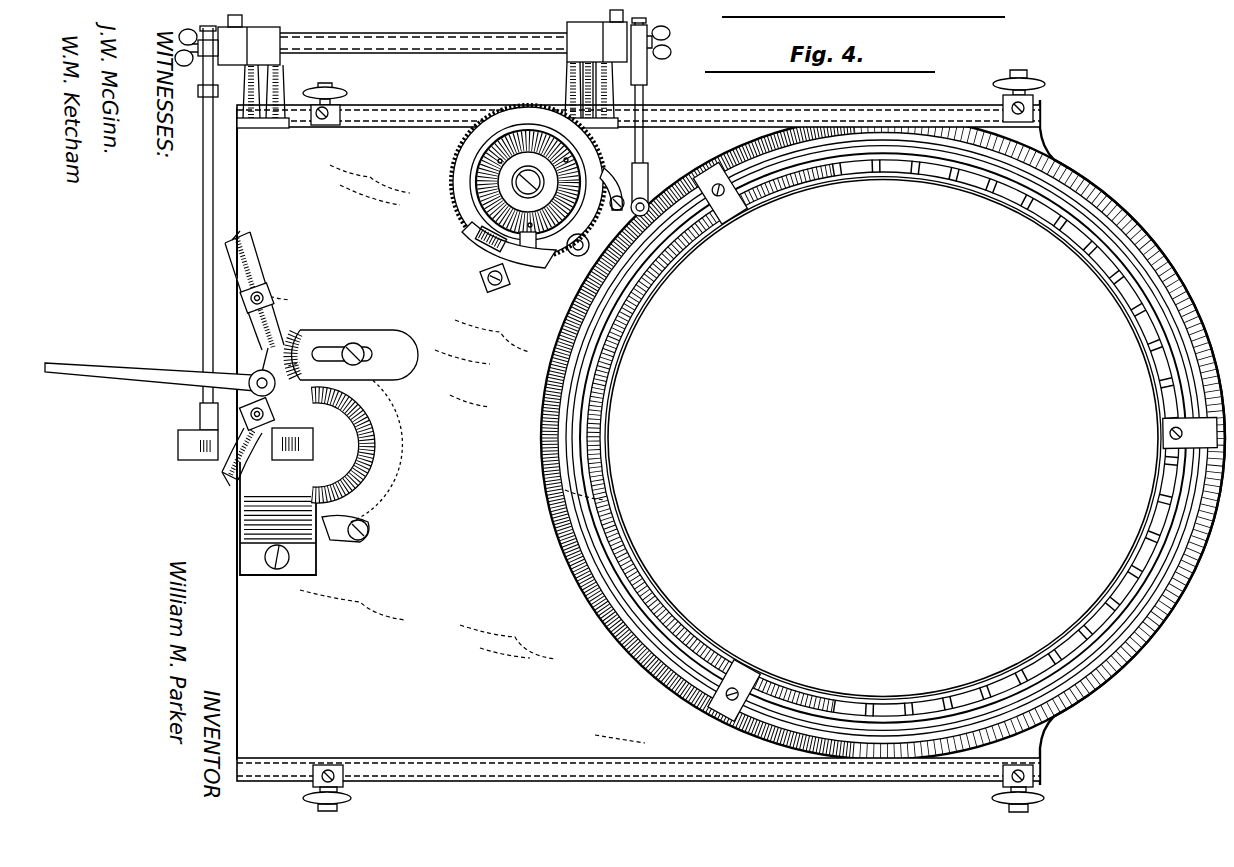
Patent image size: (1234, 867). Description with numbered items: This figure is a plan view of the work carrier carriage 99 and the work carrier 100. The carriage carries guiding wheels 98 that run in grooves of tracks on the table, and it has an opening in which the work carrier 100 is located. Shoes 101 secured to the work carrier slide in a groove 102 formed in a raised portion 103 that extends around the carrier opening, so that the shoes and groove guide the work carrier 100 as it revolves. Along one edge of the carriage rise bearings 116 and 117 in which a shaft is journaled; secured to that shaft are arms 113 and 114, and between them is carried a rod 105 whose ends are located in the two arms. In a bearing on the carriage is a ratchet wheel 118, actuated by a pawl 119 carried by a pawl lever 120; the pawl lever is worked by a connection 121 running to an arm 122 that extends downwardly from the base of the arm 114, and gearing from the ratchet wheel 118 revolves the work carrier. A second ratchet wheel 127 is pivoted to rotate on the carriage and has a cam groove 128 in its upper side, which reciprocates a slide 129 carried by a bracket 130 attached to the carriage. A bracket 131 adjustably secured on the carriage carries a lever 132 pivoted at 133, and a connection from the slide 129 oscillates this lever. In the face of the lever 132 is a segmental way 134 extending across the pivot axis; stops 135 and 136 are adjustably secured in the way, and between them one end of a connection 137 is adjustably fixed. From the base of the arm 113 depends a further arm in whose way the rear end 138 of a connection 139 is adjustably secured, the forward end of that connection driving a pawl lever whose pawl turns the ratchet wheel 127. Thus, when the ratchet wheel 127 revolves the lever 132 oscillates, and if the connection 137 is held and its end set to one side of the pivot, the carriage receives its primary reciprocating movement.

The guiding wheels 98 is at (345, 90).
The work carrier carriage 99 is at (731, 442).
The work carrier 100 is at (1143, 372).
The shoes 101 is at (742, 193).
The groove 102 is at (1082, 230).
The raised portion 103 is at (1190, 548).
The rod 105 is at (462, 54).
The arm 113 is at (254, 40).
The arm 114 is at (597, 36).
The bearing 116 is at (284, 70).
The bearing 117 is at (567, 72).
The ratchet wheel 118 is at (454, 162).
The pawl 119 is at (608, 167).
The pawl lever 120 is at (633, 213).
The connection 121 is at (646, 130).
The arm 122 is at (650, 60).
The ratchet wheel 127 is at (399, 432).
The cam groove 128 is at (362, 494).
The slide 129 is at (178, 448).
The bracket 130 is at (286, 462).
The bracket 131 is at (352, 345).
The lever 132 is at (262, 252).
The pivot 133 is at (278, 345).
The segmental way 134 is at (240, 236).
The stop 135 is at (270, 290).
The stop 136 is at (272, 413).
The connection 137 is at (150, 366).
The rear end 138 is at (217, 60).
The connection 139 is at (205, 190).